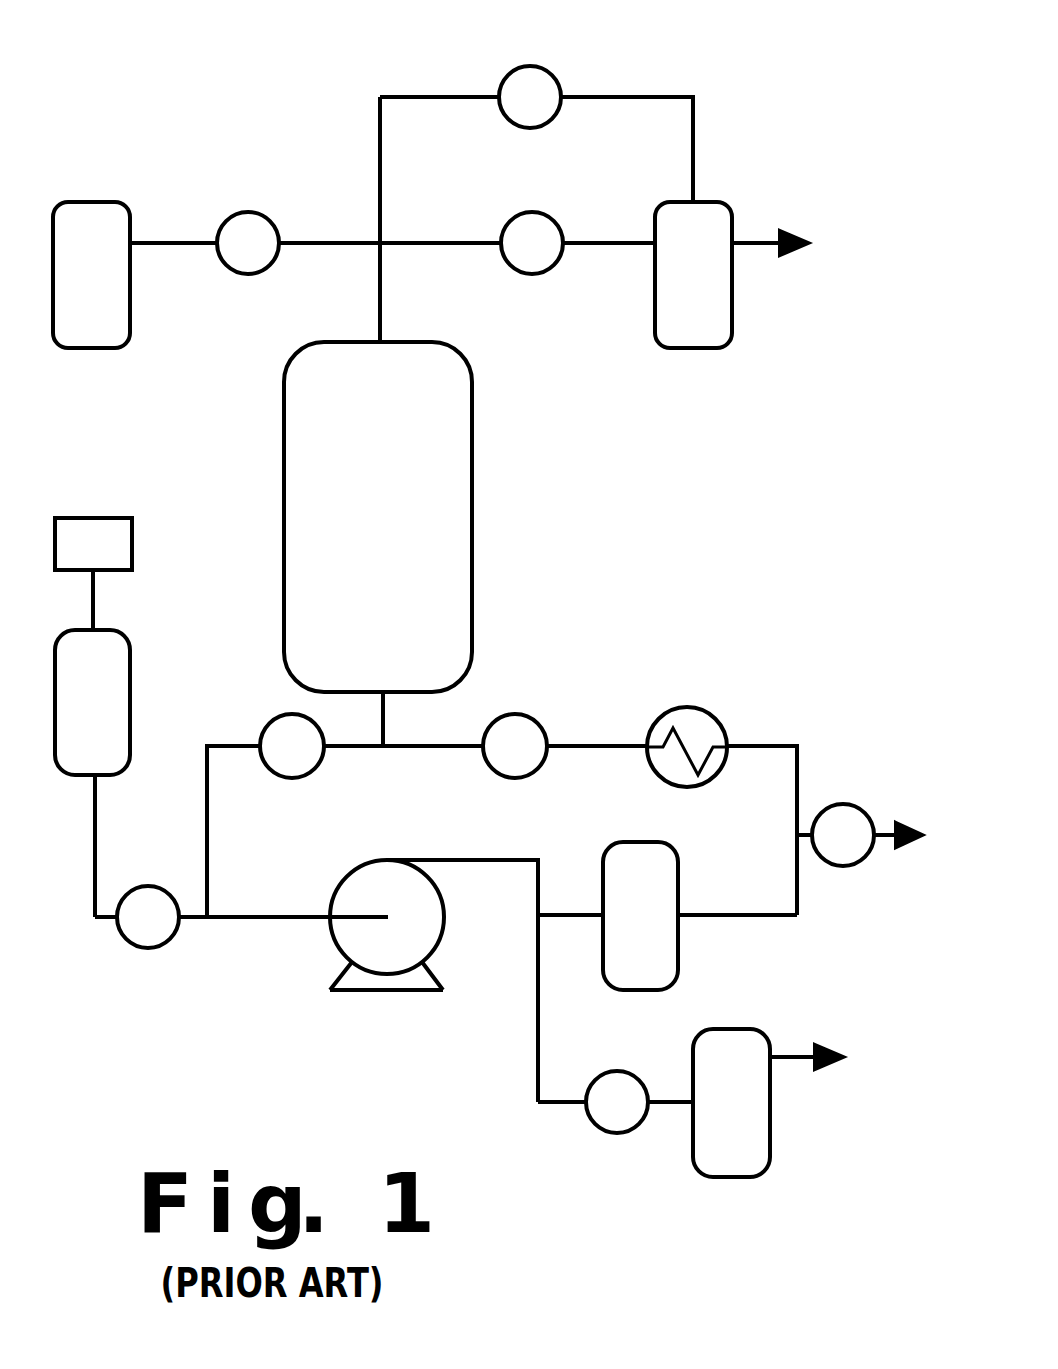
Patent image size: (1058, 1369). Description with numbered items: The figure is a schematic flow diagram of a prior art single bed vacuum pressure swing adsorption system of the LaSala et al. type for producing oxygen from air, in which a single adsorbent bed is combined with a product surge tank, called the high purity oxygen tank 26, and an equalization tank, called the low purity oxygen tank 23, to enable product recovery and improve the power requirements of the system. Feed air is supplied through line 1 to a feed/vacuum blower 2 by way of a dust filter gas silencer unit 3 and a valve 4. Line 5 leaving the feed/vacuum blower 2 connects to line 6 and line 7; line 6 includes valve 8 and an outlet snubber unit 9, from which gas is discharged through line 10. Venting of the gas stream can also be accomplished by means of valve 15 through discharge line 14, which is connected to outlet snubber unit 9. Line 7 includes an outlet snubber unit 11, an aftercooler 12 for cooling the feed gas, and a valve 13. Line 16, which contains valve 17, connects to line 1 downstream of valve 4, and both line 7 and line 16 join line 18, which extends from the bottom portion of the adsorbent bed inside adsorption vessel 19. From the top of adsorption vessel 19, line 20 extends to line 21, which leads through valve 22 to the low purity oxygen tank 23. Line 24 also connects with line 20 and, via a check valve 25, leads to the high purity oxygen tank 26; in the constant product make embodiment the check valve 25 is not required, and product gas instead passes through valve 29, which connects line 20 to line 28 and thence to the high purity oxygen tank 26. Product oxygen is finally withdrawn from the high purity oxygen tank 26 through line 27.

The line 1 is at (97, 518).
The feed/vacuum blower 2 is at (355, 937).
The dust filter gas silencer unit 3 is at (133, 713).
The valve 4 is at (147, 948).
The line 5 is at (540, 888).
The line 6 is at (673, 1097).
The line 7 is at (572, 917).
The valve 8 is at (612, 1133).
The outlet snubber unit 9 is at (770, 1135).
The line 10 is at (792, 1053).
The outlet snubber unit 11 is at (680, 865).
The aftercooler 12 is at (702, 707).
The valve 13 is at (527, 715).
The discharge line 14 is at (890, 840).
The valve 15 is at (862, 805).
The line 16 is at (207, 803).
The valve 17 is at (272, 718).
The line 18 is at (385, 720).
The adsorption vessel 19 is at (473, 492).
The line 20 is at (380, 293).
The line 21 is at (328, 243).
The valve 22 is at (228, 213).
The low purity oxygen tank 23 is at (83, 200).
The line 24 is at (422, 243).
The check valve 25 is at (555, 216).
The high purity oxygen tank 26 is at (717, 202).
The line 27 is at (752, 253).
The line 28 is at (608, 97).
The valve 29 is at (528, 64).